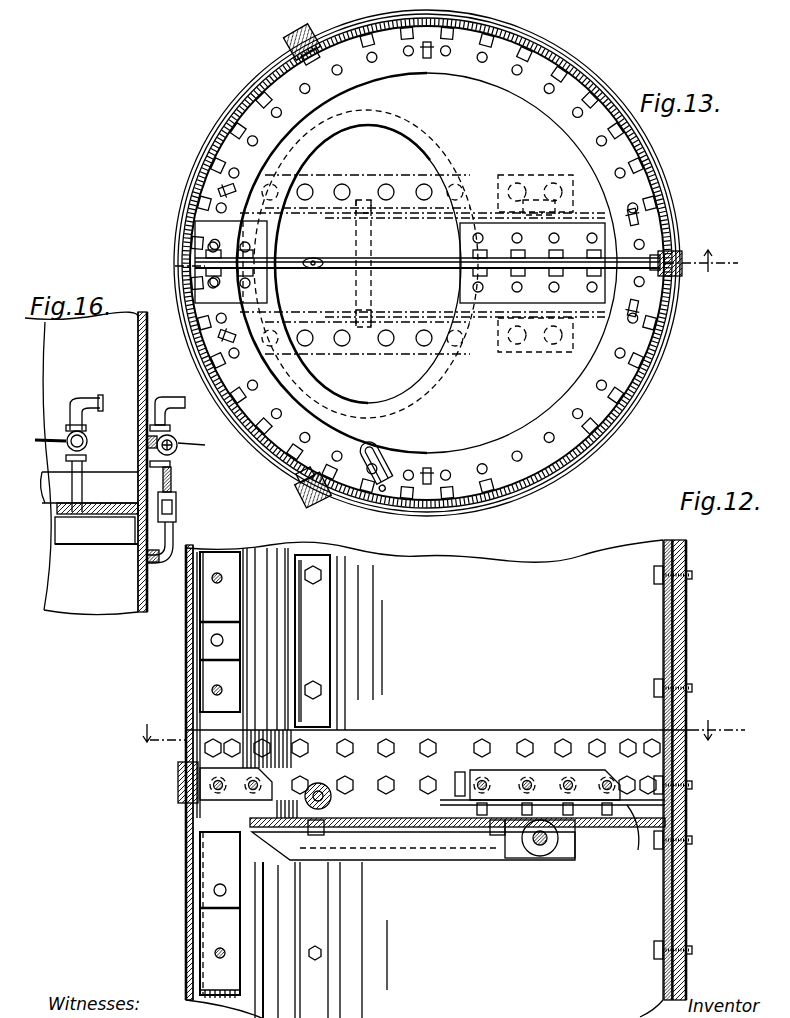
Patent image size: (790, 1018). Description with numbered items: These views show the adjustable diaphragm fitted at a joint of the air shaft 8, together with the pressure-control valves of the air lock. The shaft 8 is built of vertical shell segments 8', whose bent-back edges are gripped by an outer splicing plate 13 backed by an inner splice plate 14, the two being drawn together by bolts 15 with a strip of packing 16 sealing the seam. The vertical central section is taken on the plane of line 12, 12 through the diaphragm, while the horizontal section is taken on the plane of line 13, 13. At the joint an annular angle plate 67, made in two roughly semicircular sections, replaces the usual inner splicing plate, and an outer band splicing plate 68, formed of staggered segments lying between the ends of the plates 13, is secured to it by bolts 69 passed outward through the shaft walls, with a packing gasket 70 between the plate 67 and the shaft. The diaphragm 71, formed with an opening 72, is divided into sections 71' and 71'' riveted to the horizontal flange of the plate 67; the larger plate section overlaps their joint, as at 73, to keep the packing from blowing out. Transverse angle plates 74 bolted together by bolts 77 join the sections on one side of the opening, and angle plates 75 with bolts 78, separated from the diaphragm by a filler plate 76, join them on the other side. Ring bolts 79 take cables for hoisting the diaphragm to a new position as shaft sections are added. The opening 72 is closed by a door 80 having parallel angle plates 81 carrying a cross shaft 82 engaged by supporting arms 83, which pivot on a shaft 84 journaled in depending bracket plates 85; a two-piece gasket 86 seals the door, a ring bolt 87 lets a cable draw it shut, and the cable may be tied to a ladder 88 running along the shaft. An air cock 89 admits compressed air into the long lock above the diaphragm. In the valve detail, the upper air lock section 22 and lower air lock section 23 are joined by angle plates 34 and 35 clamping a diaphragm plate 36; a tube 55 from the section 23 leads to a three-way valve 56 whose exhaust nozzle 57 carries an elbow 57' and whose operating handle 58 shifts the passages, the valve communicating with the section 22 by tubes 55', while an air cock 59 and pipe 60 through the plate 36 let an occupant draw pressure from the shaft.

In FIG. 13, the shaft 8 is at (434, 263).
In FIG. 12, the shaft 8 is at (418, 779).
In FIG. 12, the shell segments 8' is at (690, 762).
In FIG. 13, the section line 12 12 is at (456, 266).
In FIG. 13, the splicing plate 13 is at (297, 36).
In FIG. 12, the splicing plate 13 is at (698, 880).
In FIG. 13, the splice plate 14 is at (328, 47).
In FIG. 12, the splice plate 14 is at (322, 997).
In FIG. 12, the bolts 15 is at (325, 953).
In FIG. 12, the strip of packing 16 is at (667, 900).
In FIG. 16, the upper air lock section 22 is at (148, 355).
In FIG. 16, the lower air lock section 23 is at (153, 593).
In FIG. 16, the annular angle plate 34 is at (58, 470).
In FIG. 16, the angle plate 35 is at (58, 545).
In FIG. 16, the diaphragm plate 36 is at (97, 497).
In FIG. 16, the tube 55 is at (178, 539).
In FIG. 16, the tubes 55' is at (187, 480).
In FIG. 16, the three-way valve 56 is at (180, 462).
In FIG. 16, the exhaust nozzle 57 is at (179, 436).
In FIG. 16, the elbow 57' is at (169, 399).
In FIG. 16, the operating handle 58 is at (195, 449).
In FIG. 16, the air cock 59 is at (88, 438).
In FIG. 16, the pipe 60 is at (84, 470).
In FIG. 13, the annular angle plate 67 is at (617, 430).
In FIG. 12, the annular angle plate 67 is at (470, 740).
In FIG. 13, the outer band splicing plate 68 is at (637, 407).
In FIG. 12, the outer band splicing plate 68 is at (178, 783).
In FIG. 12, the bolts 69 is at (652, 742).
In FIG. 13, the packing gasket 70 is at (643, 377).
In FIG. 12, the packing gasket 70 is at (190, 730).
In FIG. 13, the diaphragm 71 is at (393, 263).
In FIG. 12, the diaphragm 71 is at (634, 837).
In FIG. 13, the diaphragm section 71' is at (525, 153).
In FIG. 13, the diaphragm section 71'' is at (524, 373).
In FIG. 13, the opening 72 is at (433, 157).
In FIG. 12, the opening 72 is at (405, 800).
In FIG. 13, the overlap 73 is at (670, 253).
In FIG. 13, the angle plates 74 is at (570, 233).
In FIG. 12, the angle plates 74 is at (538, 770).
In FIG. 13, the angle plates 75 is at (257, 290).
In FIG. 12, the angle plates 75 is at (190, 762).
In FIG. 12, the filler plate 76 is at (197, 843).
In FIG. 13, the bolts 77 is at (477, 248).
In FIG. 12, the bolts 77 is at (528, 787).
In FIG. 13, the bolts 78 is at (215, 250).
In FIG. 12, the bolts 78 is at (188, 805).
In FIG. 13, the ring bolts 79 is at (229, 184).
In FIG. 12, the ring bolts 79 is at (457, 772).
In FIG. 12, the door 80 is at (337, 865).
In FIG. 13, the angle plates 81 is at (377, 182).
In FIG. 12, the angle plates 81 is at (360, 866).
In FIG. 13, the cross shaft 82 is at (373, 272).
In FIG. 12, the cross shaft 82 is at (420, 866).
In FIG. 13, the supporting arms 83 is at (405, 223).
In FIG. 12, the supporting arms 83 is at (483, 862).
In FIG. 13, the shaft 84 is at (540, 352).
In FIG. 12, the shaft 84 is at (547, 843).
In FIG. 13, the bracket plates 85 is at (543, 187).
In FIG. 12, the bracket plates 85 is at (575, 838).
In FIG. 12, the gasket 86 is at (492, 830).
In FIG. 13, the ring bolt 87 is at (320, 260).
In FIG. 12, the ring bolt 87 is at (320, 783).
In FIG. 12, the ladder 88 is at (212, 600).
In FIG. 13, the air cock 89 is at (398, 433).